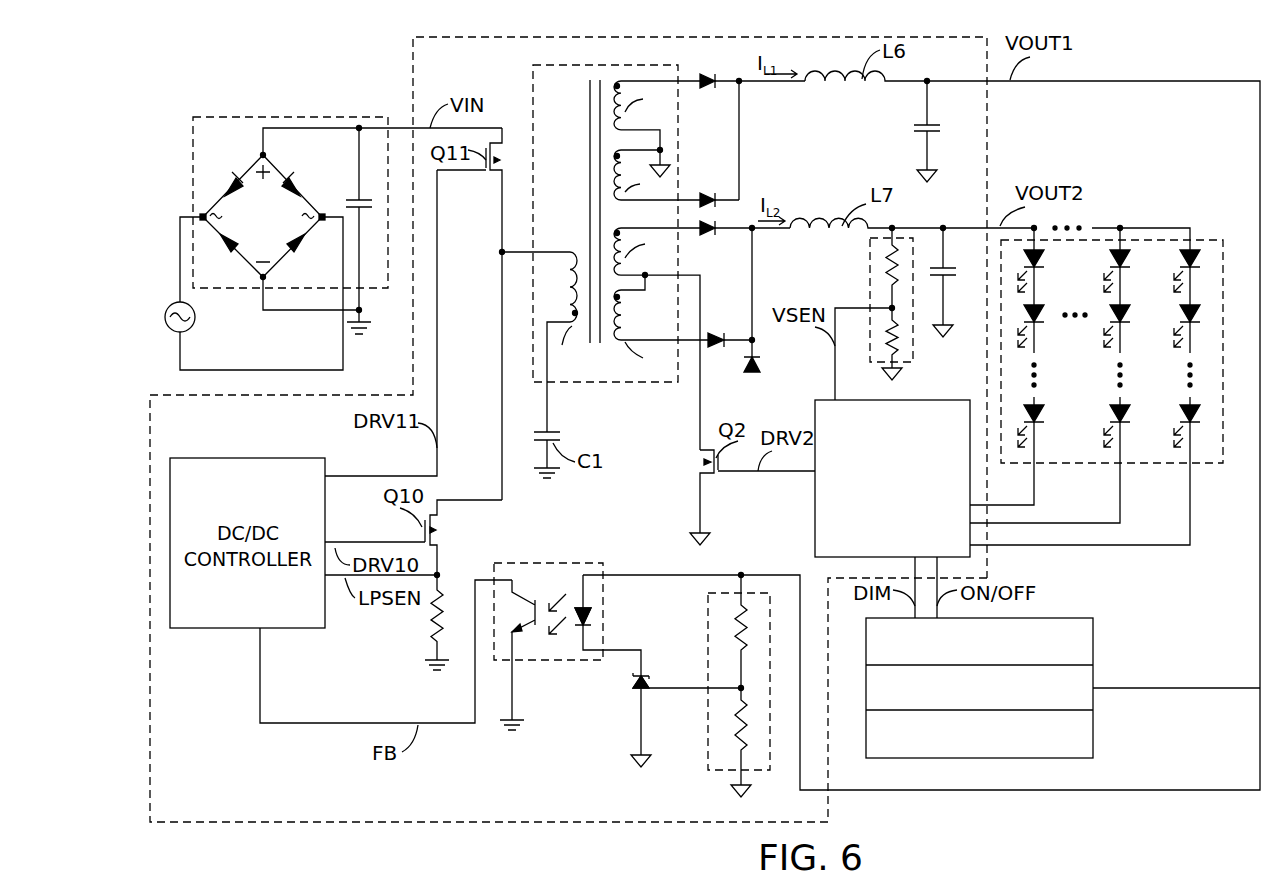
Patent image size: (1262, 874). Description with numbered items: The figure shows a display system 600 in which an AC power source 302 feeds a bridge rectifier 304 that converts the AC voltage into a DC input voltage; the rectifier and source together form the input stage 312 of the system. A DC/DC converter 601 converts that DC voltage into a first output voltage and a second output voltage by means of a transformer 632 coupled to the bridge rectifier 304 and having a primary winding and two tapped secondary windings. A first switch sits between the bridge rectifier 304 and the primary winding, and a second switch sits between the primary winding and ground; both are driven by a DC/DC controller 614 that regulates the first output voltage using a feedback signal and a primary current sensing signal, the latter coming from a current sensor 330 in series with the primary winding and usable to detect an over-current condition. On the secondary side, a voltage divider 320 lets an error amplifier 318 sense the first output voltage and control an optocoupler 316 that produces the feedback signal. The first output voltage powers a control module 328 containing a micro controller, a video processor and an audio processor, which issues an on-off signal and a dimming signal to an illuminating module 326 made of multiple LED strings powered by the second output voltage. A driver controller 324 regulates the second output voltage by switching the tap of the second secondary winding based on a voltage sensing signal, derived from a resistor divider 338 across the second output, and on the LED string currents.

The display system 600 is at (237, 97).
The DC/DC converter 601 is at (413, 70).
The bridge rectifier 304 is at (285, 117).
The AC power source 302 is at (192, 328).
The AC input stage 312 is at (292, 294).
The DC/DC controller 614 is at (228, 630).
The transformer 632 is at (580, 383).
The voltage sense resistor divider 338 is at (870, 292).
The illuminating module 326 is at (1052, 463).
The driver controller 324 is at (815, 548).
The control module 328 is at (1093, 632).
The optocoupler 316 is at (565, 562).
The error amplifier 318 is at (648, 672).
The voltage divider 320 is at (707, 628).
The current sensor 330 is at (433, 635).